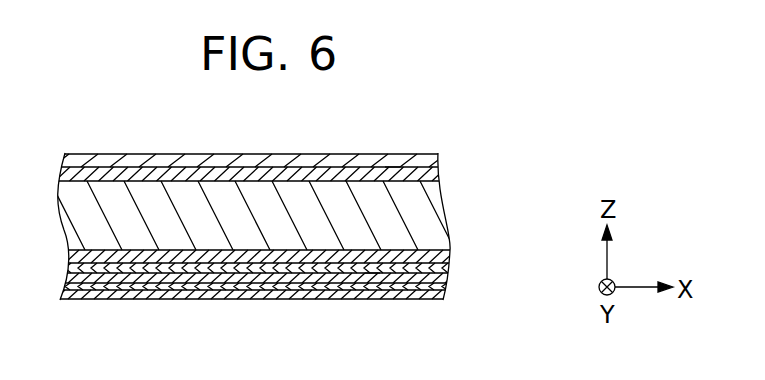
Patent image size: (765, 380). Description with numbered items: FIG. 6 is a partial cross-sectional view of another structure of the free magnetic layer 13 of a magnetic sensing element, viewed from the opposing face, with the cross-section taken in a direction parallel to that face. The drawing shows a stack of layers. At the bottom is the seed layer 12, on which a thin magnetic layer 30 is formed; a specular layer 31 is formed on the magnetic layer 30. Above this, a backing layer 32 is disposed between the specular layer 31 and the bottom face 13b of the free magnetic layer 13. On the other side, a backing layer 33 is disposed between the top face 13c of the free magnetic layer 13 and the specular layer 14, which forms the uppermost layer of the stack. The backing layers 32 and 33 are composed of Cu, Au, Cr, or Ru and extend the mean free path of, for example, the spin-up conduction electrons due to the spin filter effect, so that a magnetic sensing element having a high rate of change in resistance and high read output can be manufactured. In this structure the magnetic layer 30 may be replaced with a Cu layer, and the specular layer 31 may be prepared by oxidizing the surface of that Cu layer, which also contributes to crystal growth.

The seed layer 12 is at (448, 293).
The free magnetic layer 13 is at (432, 220).
The bottom face 13b is at (368, 272).
The top face 13c is at (393, 172).
The specular layer 14 is at (447, 158).
The magnetic layer 30 is at (450, 282).
The specular layer 31 is at (450, 268).
The backing layer 32 is at (450, 257).
The backing layer 33 is at (445, 177).